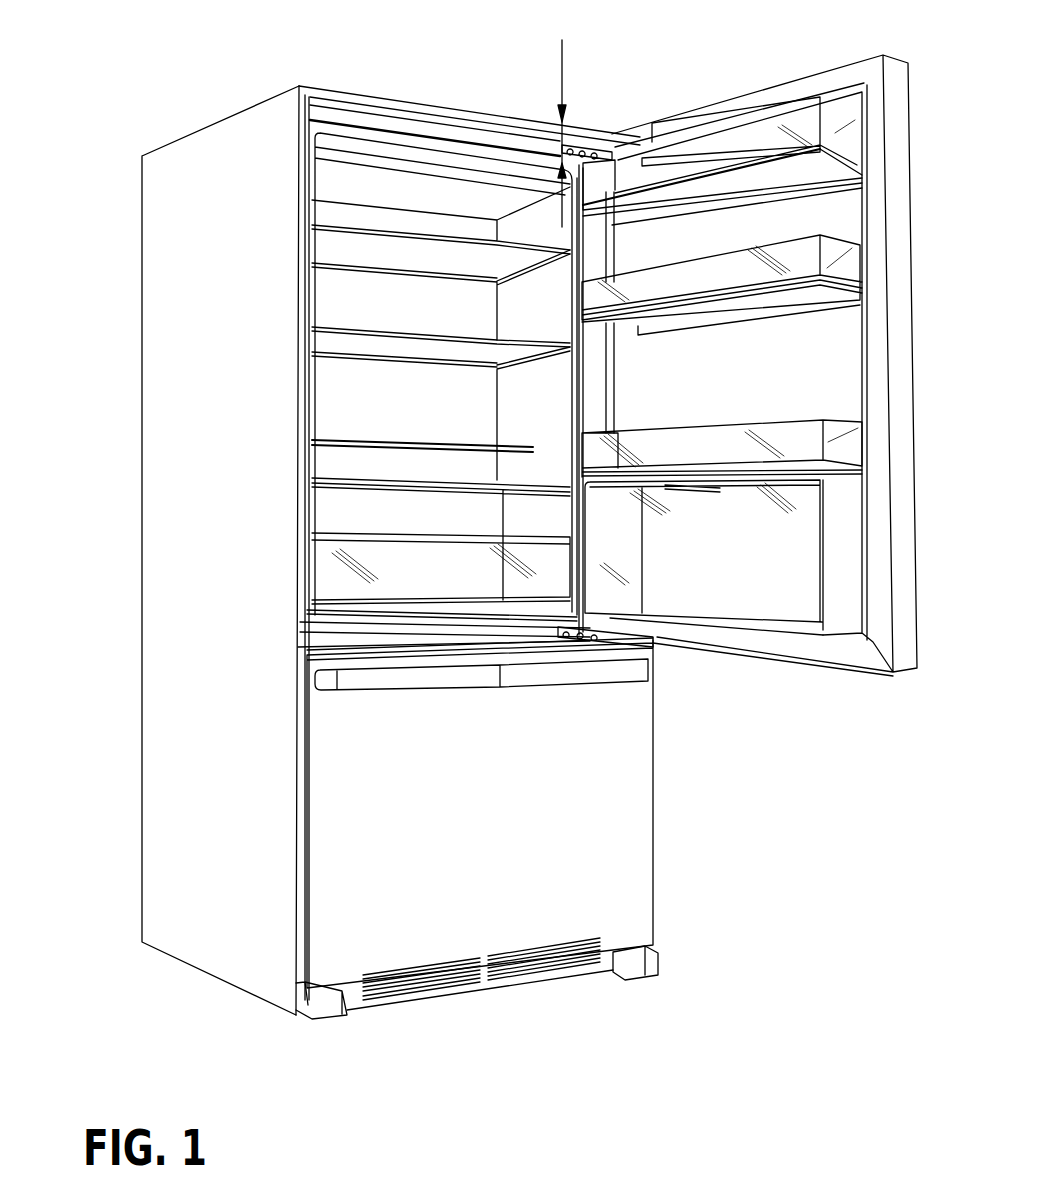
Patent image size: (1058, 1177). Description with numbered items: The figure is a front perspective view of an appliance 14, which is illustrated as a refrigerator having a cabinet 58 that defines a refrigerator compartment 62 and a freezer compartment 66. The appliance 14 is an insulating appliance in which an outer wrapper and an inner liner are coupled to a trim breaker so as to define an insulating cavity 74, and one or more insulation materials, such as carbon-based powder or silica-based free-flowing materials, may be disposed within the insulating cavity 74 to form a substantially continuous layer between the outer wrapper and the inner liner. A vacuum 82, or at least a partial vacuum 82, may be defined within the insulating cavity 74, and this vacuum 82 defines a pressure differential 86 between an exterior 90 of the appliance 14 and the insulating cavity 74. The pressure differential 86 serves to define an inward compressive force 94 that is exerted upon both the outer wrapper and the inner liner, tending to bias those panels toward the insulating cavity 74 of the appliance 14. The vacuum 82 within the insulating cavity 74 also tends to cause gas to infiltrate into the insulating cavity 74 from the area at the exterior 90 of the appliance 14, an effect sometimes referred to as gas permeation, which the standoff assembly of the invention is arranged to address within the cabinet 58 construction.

The appliance 14 is at (501, 509).
The cabinet 58 is at (350, 519).
The refrigerator compartment 62 is at (347, 405).
The freezer compartment 66 is at (577, 768).
The insulating cavity 74 is at (357, 118).
The vacuum 82 is at (300, 250).
The pressure differential 86 is at (140, 347).
The exterior 90 is at (190, 650).
The inward compressive force 94 is at (564, 72).